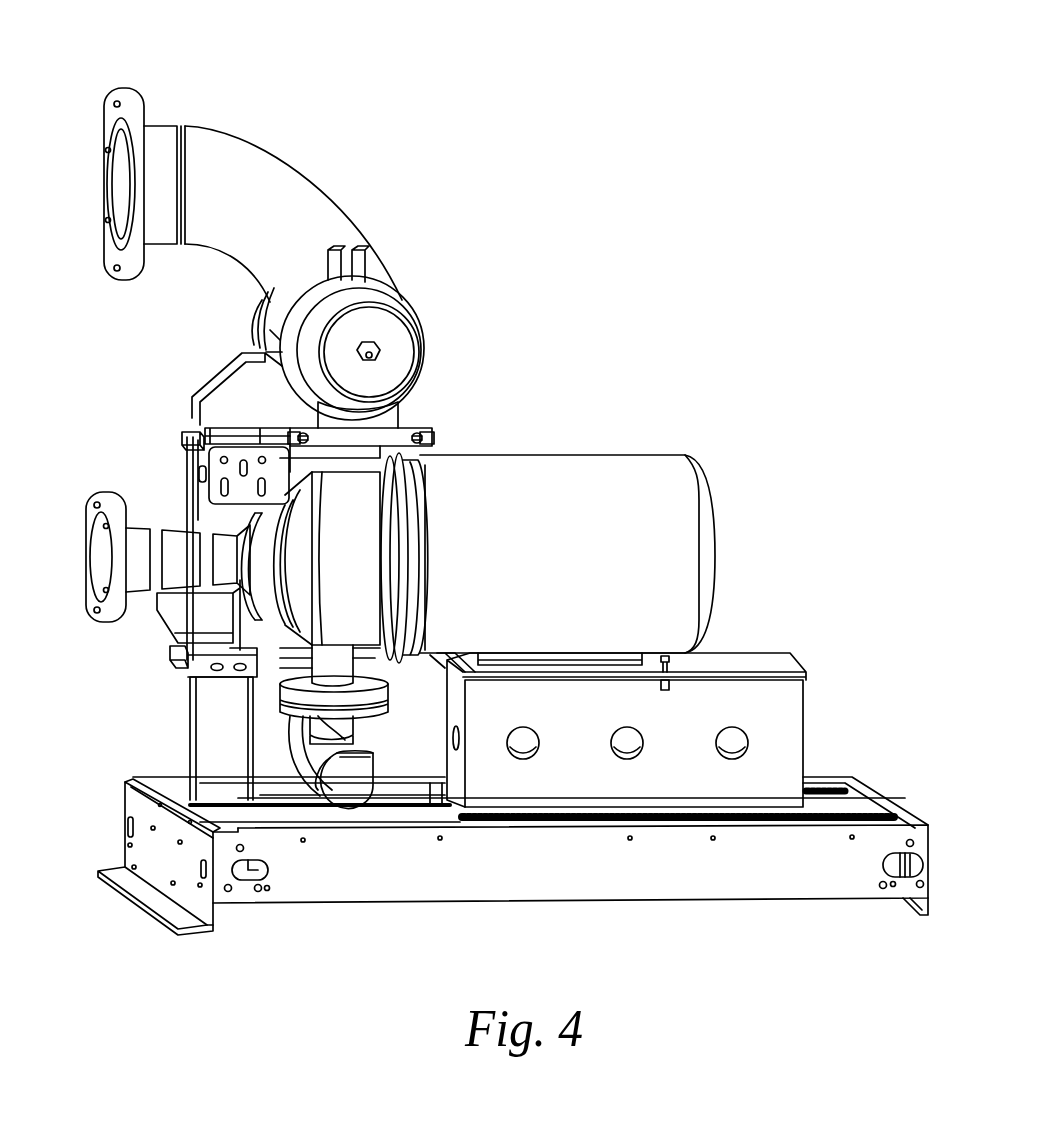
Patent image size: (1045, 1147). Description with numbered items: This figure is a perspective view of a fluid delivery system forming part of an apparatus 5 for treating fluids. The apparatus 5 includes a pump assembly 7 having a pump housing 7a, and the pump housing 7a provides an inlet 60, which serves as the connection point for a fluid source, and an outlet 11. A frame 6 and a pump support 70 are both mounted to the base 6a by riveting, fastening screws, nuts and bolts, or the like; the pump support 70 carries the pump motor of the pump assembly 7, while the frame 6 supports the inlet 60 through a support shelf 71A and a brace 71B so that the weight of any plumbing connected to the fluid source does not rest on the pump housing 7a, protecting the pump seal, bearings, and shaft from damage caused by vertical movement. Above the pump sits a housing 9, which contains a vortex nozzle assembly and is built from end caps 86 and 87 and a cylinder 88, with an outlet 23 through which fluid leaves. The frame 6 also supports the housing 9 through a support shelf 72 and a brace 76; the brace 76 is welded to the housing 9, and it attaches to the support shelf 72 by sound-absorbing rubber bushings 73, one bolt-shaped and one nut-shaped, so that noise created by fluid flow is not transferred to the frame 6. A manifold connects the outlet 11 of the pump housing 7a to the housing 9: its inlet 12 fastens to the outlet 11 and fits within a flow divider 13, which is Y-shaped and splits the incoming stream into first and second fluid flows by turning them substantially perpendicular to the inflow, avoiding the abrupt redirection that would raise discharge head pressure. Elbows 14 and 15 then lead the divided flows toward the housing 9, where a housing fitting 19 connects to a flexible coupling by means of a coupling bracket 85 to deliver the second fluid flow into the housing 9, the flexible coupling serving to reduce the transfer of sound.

The apparatus for treating fluids 5 is at (578, 310).
The frame 6 is at (160, 782).
The base 6a is at (582, 872).
The pump assembly 7 is at (560, 570).
The pump housing 7a is at (362, 570).
The housing 9 is at (416, 270).
The outlet 11 is at (350, 664).
The inlet 12 is at (350, 718).
The flow divider 13 is at (292, 777).
The elbow 14 is at (368, 775).
The elbow 15 is at (292, 756).
The housing fitting 19 is at (392, 412).
The outlet 23 is at (142, 126).
The inlet 60 is at (98, 540).
The pump support 70 is at (580, 734).
The support shelf 71A is at (172, 656).
The brace 71B is at (216, 627).
The support shelf 72 is at (182, 435).
The bushings 73 is at (218, 432).
The brace 76 is at (212, 385).
The coupling bracket 85 is at (425, 440).
The end cap 86 is at (255, 302).
The end cap 87 is at (405, 350).
The cylinder 88 is at (268, 340).